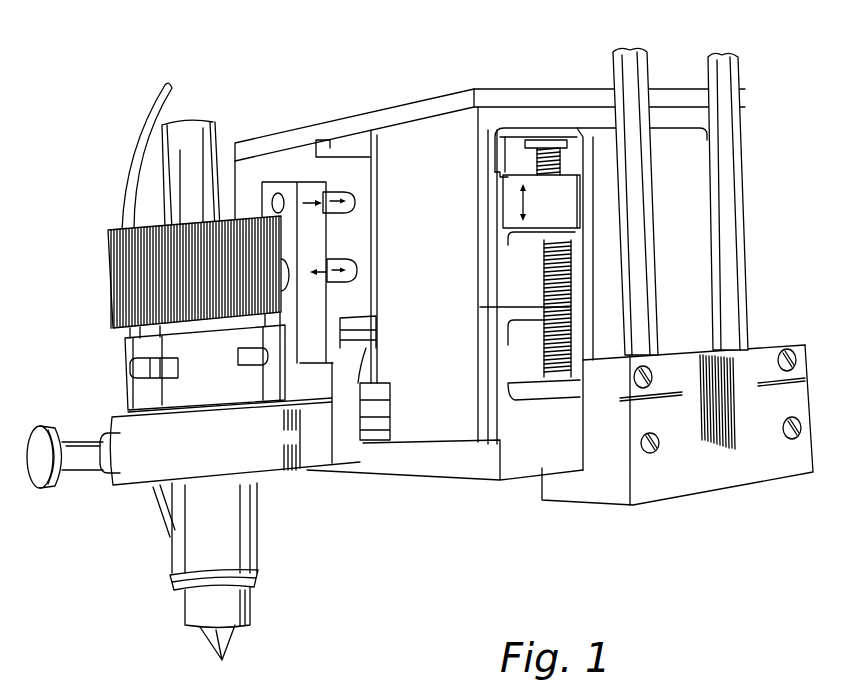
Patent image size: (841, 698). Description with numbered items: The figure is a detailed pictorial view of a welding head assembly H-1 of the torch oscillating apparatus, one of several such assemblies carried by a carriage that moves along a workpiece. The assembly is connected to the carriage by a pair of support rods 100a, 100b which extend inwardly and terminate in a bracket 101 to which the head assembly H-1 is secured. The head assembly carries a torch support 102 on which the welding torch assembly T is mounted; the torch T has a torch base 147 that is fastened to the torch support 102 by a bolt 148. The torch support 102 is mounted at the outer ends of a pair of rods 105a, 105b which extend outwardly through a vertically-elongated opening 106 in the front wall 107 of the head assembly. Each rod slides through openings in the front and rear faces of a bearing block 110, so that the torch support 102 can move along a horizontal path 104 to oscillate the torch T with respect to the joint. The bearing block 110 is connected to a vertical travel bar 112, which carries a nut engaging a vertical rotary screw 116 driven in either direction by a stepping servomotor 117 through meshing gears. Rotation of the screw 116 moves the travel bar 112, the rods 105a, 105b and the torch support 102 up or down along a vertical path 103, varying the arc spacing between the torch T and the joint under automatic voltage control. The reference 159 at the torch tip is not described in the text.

The welding head assembly H-1 is at (311, 80).
The welding torch assembly T is at (64, 270).
The support rod 100a is at (613, 80).
The support rod 100b is at (740, 87).
The bracket 101 is at (625, 497).
The torch support 102 is at (299, 489).
The vertical path 103 is at (520, 208).
The horizontal path 104 is at (323, 193).
The rod 105a is at (330, 196).
The rod 105b is at (340, 254).
The vertically-elongated opening 106 is at (368, 345).
The front wall 107 is at (477, 433).
The bearing block 110 is at (365, 264).
The vertical travel bar 112 is at (503, 182).
The vertical rotary screw 116 is at (545, 340).
The stepping servomotor 117 is at (600, 157).
The torch base 147 is at (117, 398).
The bolt 148 is at (80, 468).
The tool tip 159 is at (233, 645).